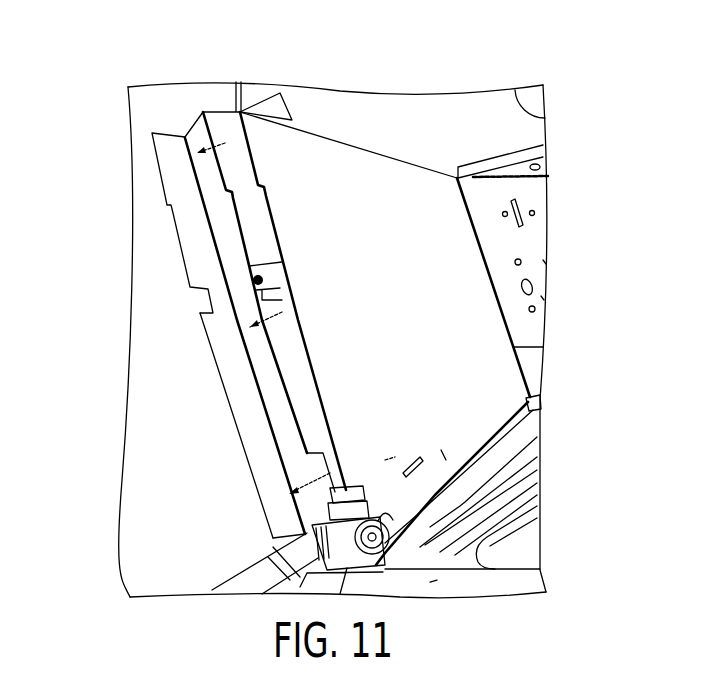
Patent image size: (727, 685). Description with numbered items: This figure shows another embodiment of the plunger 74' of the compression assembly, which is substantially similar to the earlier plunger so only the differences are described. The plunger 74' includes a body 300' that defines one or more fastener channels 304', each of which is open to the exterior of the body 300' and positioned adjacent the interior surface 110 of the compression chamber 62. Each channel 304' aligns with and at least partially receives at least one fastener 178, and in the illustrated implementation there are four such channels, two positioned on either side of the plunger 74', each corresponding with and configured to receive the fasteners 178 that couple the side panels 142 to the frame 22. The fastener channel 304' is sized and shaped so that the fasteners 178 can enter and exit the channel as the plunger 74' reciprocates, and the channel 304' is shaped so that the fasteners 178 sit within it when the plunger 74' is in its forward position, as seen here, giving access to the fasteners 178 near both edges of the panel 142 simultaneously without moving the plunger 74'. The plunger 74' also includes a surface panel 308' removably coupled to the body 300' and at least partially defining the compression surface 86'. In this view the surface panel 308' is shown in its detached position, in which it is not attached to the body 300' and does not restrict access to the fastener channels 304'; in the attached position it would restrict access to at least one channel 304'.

The frame 22 is at (247, 92).
The plunger 74' is at (327, 253).
The surface panel 308' is at (134, 223).
The fastener channel 304' is at (321, 385).
The fastener 178 is at (255, 281).
The interior surface 110 is at (163, 356).
The compression surface 86' is at (181, 282).
The body 300' is at (494, 363).
The compression chamber 62 is at (168, 513).
The side panel 142 is at (162, 540).